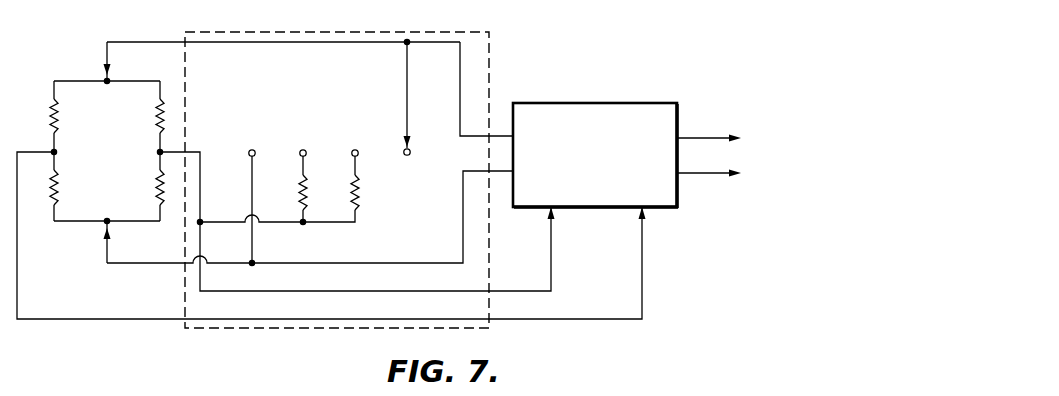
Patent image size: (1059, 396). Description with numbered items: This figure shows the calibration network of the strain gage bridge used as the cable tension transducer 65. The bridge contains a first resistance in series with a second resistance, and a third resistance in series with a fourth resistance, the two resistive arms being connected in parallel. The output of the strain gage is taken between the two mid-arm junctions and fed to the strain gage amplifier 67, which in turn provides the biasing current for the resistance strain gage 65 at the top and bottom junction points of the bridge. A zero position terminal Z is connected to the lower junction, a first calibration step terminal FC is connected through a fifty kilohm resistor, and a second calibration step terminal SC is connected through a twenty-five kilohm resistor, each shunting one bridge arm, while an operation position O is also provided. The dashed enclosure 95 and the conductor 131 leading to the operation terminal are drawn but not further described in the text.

The cable tension transducer 65 is at (117, 161).
The signal conditioning circuit 95 is at (440, 115).
The conductor to open terminal 131 is at (395, 106).
The strain gage amplifier 67 is at (637, 103).